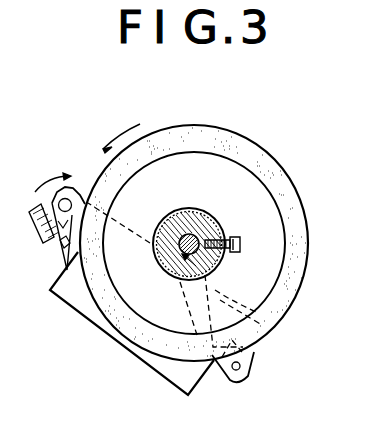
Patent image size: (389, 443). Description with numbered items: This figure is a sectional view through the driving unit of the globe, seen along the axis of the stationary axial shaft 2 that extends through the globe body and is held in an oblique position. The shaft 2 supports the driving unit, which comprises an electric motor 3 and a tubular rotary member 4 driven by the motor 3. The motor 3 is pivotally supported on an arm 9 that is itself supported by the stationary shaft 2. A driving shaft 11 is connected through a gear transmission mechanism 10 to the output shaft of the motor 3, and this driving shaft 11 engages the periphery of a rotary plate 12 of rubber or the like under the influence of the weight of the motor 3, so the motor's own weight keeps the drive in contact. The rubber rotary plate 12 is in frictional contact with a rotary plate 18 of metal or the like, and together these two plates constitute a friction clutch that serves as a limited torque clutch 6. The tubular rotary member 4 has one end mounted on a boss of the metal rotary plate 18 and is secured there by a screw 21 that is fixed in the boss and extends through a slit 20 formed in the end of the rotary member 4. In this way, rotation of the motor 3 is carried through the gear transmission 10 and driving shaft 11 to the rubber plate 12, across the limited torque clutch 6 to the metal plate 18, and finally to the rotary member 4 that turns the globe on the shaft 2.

The stationary axial shaft 2 is at (197, 233).
The electric motor 3 is at (74, 298).
The rotary member 4 is at (168, 217).
The limited torque clutch 6 is at (294, 178).
The arm 9 is at (262, 335).
The gear transmission mechanism 10 is at (47, 170).
The driving shaft 11 is at (52, 197).
The rotary plate 12 is at (188, 126).
The rotary plate 18 is at (229, 166).
The slit 20 is at (230, 233).
The screw 21 is at (239, 251).